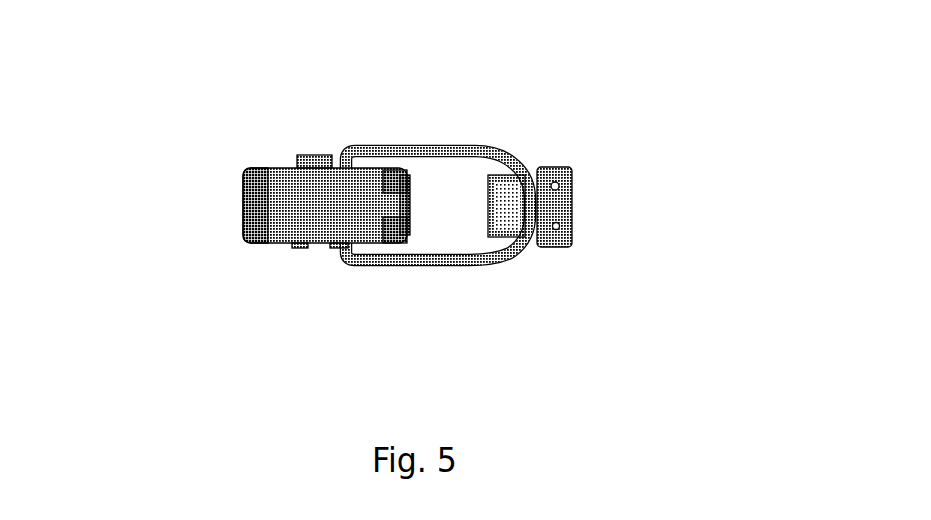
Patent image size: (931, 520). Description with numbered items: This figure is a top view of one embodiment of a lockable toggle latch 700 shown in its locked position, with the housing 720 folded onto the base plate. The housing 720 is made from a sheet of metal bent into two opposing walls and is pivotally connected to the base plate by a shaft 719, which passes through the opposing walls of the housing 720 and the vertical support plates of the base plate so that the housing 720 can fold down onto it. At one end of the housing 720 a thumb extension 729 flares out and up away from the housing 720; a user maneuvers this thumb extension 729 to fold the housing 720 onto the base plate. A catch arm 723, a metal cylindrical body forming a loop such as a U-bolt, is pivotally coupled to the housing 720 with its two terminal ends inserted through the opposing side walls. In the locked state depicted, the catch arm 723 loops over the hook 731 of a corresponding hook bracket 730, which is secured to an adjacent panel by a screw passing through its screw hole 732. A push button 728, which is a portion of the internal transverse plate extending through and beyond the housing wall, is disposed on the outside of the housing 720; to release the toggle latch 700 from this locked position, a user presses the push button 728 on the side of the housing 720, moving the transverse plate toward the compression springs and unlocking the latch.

The toggle latch 700 is at (636, 77).
The shaft 719 is at (400, 181).
The housing 720 is at (335, 214).
The catch arm 723 is at (412, 262).
The push button 728 is at (325, 155).
The thumb extension 729 is at (247, 202).
The hook bracket 730 is at (560, 168).
The hook 731 is at (515, 216).
The screw hole 732 is at (560, 223).